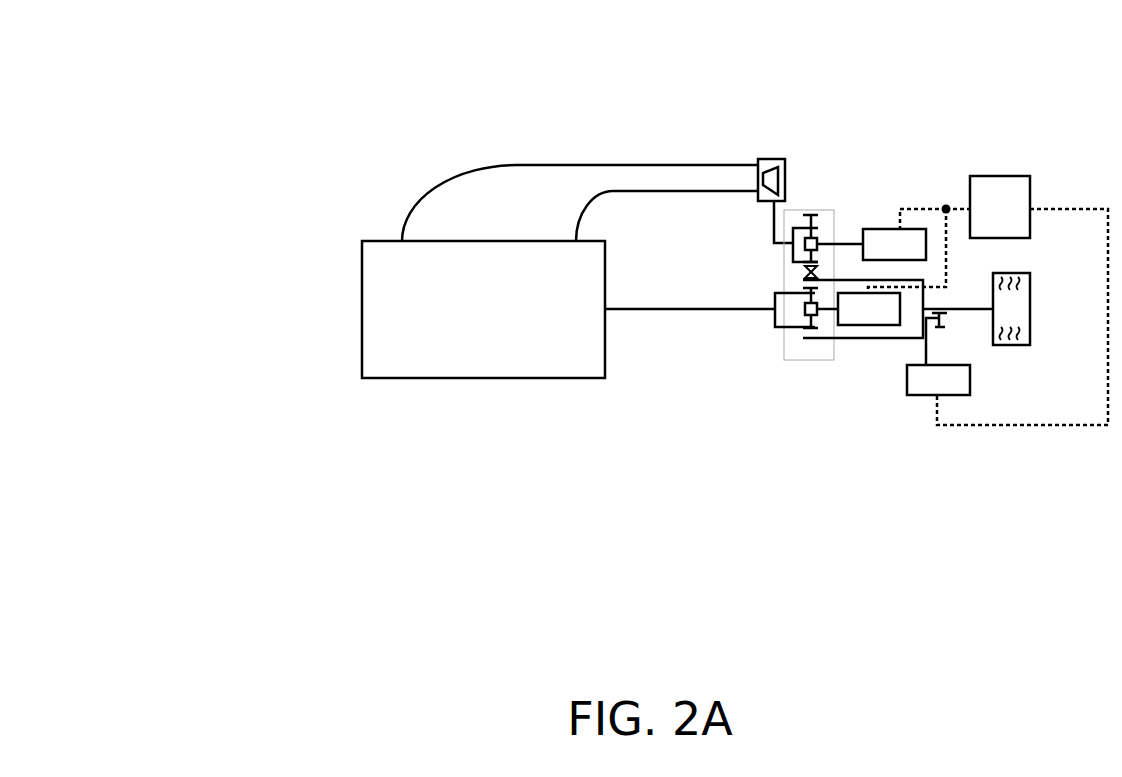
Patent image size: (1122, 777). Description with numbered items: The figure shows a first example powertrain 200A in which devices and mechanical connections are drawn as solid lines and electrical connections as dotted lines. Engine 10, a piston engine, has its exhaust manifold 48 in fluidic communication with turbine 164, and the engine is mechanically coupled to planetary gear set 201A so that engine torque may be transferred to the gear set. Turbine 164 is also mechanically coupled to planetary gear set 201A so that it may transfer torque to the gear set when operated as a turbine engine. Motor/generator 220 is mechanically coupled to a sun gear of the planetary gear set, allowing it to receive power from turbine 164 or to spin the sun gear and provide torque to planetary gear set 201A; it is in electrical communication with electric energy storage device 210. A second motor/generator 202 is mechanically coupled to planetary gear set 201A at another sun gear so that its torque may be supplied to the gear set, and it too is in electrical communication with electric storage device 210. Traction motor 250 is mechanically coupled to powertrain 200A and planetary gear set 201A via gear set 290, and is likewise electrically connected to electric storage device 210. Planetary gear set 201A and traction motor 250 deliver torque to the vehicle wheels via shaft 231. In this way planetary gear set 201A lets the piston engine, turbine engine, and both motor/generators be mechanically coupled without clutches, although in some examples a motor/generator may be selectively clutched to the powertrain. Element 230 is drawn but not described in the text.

The powertrain 200A is at (276, 44).
The engine 10 is at (497, 322).
The exhaust manifold 48 is at (450, 179).
The turbine 164 is at (767, 159).
The planetary gear set 201A is at (808, 360).
The motor/generator 220 is at (894, 244).
The second motor/generator 202 is at (863, 309).
The electric energy storage device 210 is at (986, 221).
The shaft 231 is at (950, 307).
The gear set 290 is at (937, 324).
The traction motor 250 is at (938, 380).
The heat exchanger 230 is at (1012, 345).